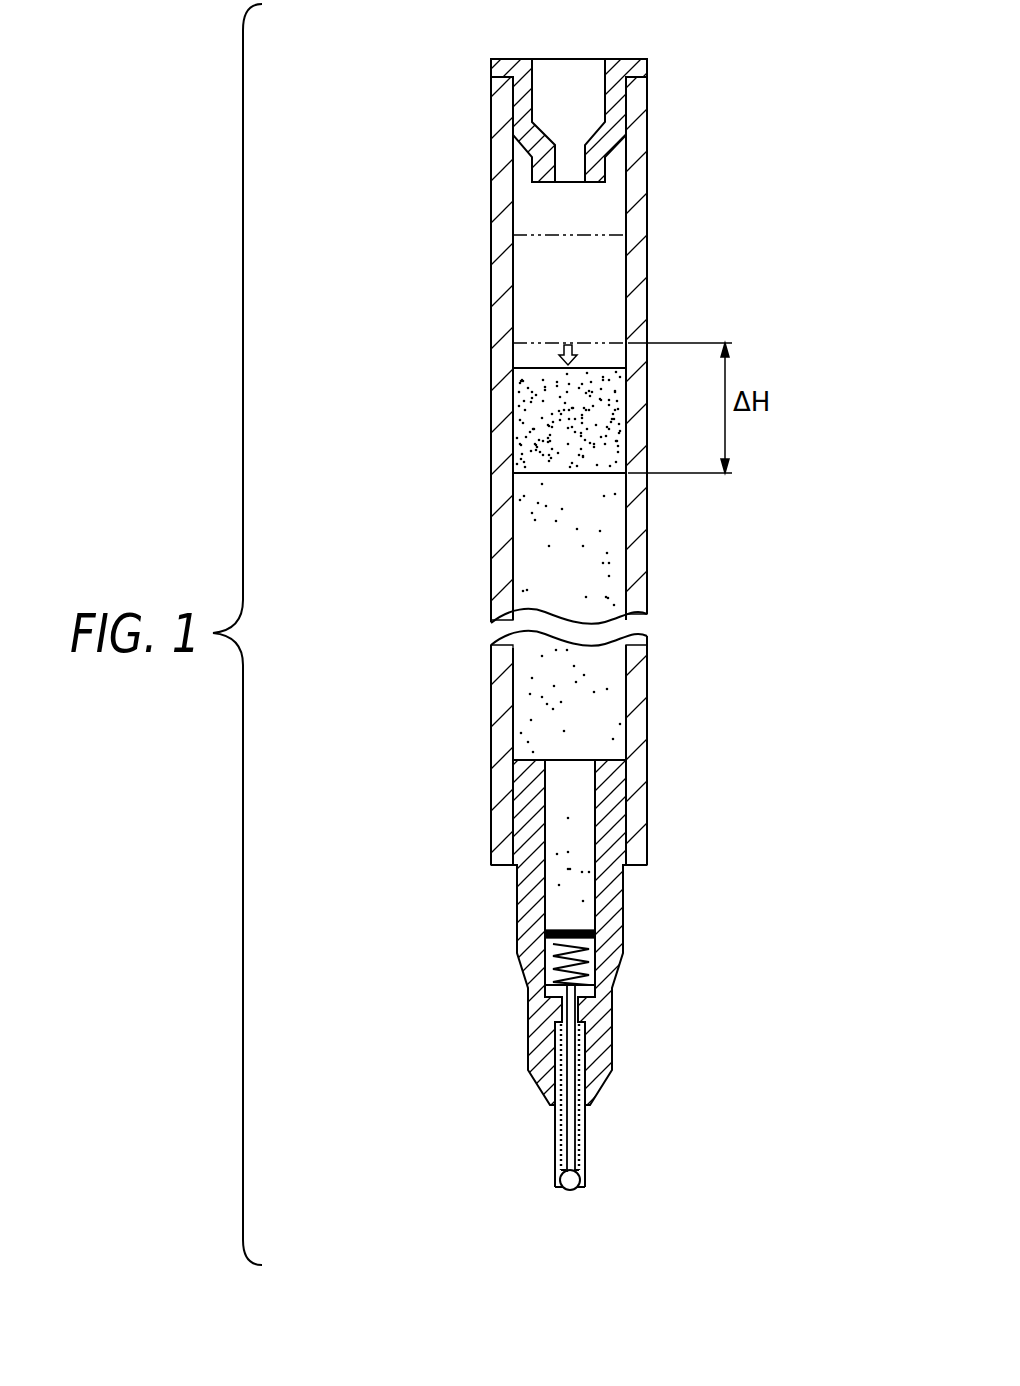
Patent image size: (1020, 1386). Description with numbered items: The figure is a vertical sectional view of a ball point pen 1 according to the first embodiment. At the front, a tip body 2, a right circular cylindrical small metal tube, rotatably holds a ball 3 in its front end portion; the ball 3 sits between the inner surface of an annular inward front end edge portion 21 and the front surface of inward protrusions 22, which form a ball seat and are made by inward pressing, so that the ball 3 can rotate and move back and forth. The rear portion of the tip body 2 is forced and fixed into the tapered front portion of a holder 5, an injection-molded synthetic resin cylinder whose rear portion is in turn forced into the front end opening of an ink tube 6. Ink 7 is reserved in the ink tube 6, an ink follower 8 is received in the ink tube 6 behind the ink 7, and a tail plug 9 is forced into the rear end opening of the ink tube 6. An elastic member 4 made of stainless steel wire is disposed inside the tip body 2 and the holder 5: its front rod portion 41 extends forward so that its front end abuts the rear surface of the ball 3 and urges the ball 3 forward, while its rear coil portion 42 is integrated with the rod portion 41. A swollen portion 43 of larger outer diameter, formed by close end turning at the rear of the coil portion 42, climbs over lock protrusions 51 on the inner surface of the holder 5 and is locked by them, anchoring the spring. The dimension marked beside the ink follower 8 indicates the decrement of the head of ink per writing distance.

The ball point pen 1 is at (468, 113).
The tip body 2 is at (555, 1133).
The ball 3 is at (567, 1187).
The elastic member 4 is at (547, 987).
The holder 5 is at (522, 853).
The ink tube 6 is at (507, 551).
The ink 7 is at (545, 698).
The ink follower 8 is at (538, 428).
The tail plug 9 is at (613, 100).
The front end edge portion 21 is at (583, 1193).
The inward protrusion (ball seat) 22 is at (586, 1169).
The rod portion 41 is at (576, 1112).
The coil portion 42 is at (598, 956).
The swollen portion 43 is at (597, 932).
The lock protrusion 51 is at (547, 925).